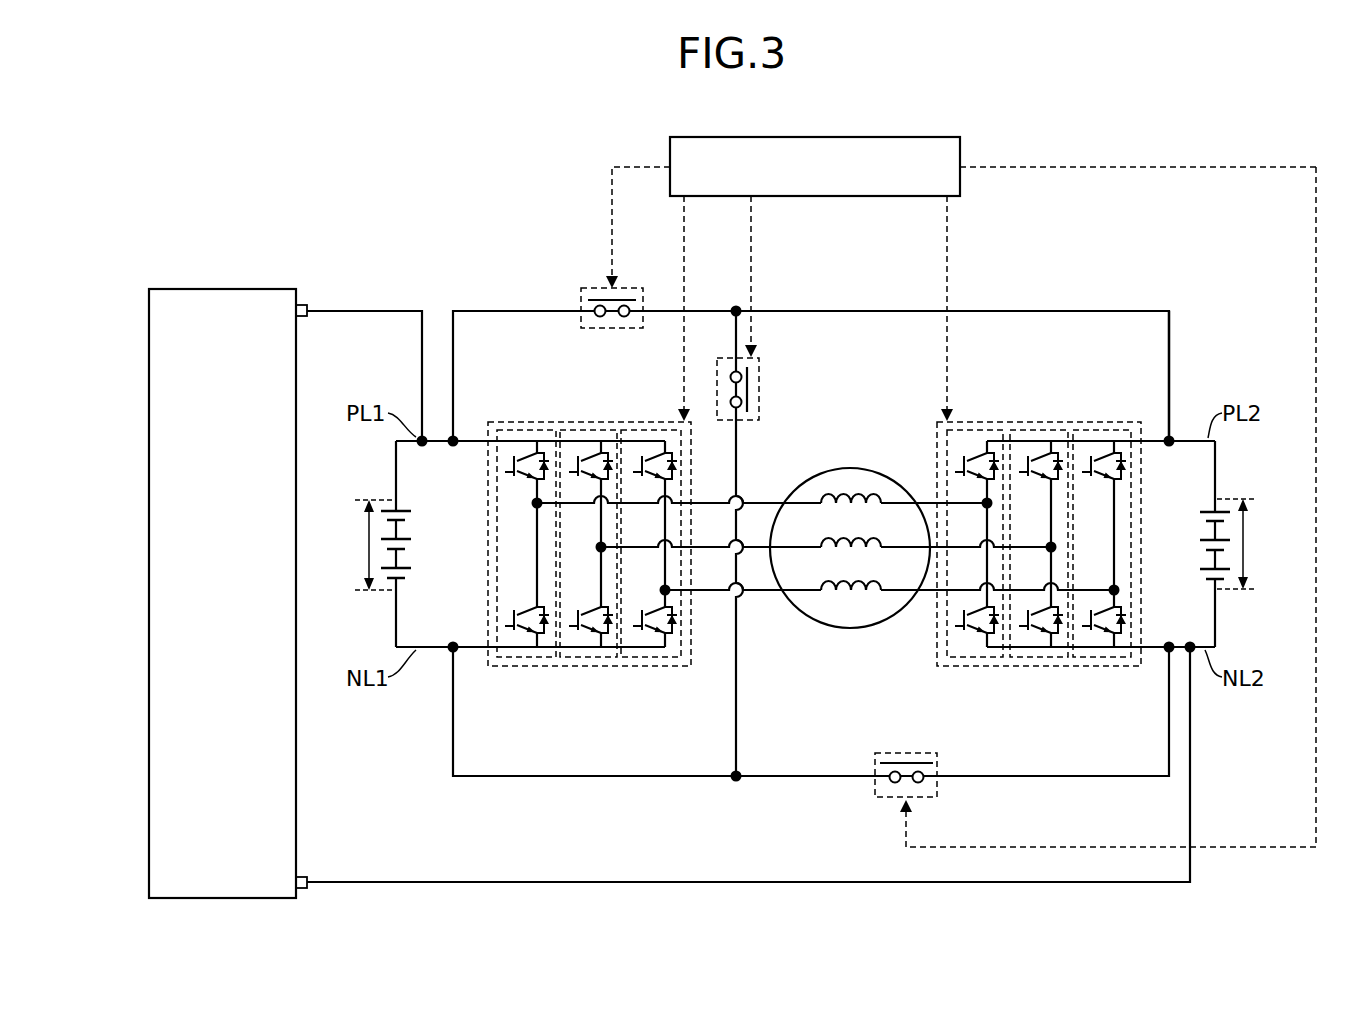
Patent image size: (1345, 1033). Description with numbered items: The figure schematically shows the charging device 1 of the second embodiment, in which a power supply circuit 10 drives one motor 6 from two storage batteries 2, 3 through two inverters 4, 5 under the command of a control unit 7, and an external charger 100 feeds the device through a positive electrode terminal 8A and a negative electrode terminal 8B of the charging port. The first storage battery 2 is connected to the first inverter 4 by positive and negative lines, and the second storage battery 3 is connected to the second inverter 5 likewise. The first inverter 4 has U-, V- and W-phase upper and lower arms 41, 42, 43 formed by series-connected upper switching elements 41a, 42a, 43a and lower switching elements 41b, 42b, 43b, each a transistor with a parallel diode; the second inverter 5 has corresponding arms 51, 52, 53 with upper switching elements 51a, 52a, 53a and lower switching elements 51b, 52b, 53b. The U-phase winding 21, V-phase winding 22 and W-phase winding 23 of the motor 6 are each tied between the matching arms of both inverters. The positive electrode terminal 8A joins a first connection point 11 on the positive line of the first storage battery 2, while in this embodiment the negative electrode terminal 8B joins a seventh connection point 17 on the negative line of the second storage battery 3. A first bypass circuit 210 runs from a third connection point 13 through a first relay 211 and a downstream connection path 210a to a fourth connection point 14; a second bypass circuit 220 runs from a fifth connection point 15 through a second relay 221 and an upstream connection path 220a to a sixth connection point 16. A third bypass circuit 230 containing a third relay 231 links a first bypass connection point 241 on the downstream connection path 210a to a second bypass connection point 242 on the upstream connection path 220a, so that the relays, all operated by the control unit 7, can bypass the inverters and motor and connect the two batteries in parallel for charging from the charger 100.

The charging device 1 is at (1138, 140).
The charger 100 is at (236, 289).
The positive electrode terminal 8A is at (302, 304).
The negative electrode terminal 8B is at (304, 890).
The control unit 7 is at (890, 137).
The power supply circuit 10 is at (1078, 282).
The first storage battery 2 is at (388, 500).
The second storage battery 3 is at (1222, 500).
The first inverter 4 is at (565, 421).
The second inverter 5 is at (1075, 421).
The motor 6 is at (846, 468).
The first connection point 11 is at (422, 447).
The third connection point 13 is at (453, 447).
The fourth connection point 14 is at (1169, 447).
The fifth connection point 15 is at (1168, 640).
The sixth connection point 16 is at (455, 640).
The seventh connection point 17 is at (1190, 640).
The U-phase winding 21 is at (829, 497).
The V-phase winding 22 is at (866, 541).
The W-phase winding 23 is at (870, 598).
The U-phase upper and lower arms 41 is at (533, 658).
The V-phase upper and lower arms 42 is at (597, 658).
The W-phase upper and lower arms 43 is at (660, 658).
The switching element 41a is at (503, 470).
The switching element 42a is at (567, 470).
The switching element 43a is at (631, 470).
The switching element 41b is at (503, 624).
The switching element 42b is at (567, 624).
The switching element 43b is at (631, 624).
The U-phase upper and lower arms 51 is at (983, 658).
The V-phase upper and lower arms 52 is at (1047, 658).
The W-phase upper and lower arms 53 is at (1109, 658).
The switching element 51a is at (953, 470).
The switching element 52a is at (1017, 470).
The switching element 53a is at (1080, 470).
The switching element 51b is at (953, 624).
The switching element 52b is at (1017, 624).
The switching element 53b is at (1080, 624).
The first bypass circuit 210 is at (820, 312).
The downstream connection path 210a is at (1017, 309).
The first relay 211 is at (612, 270).
The second bypass circuit 220 is at (787, 780).
The upstream connection path 220a is at (487, 780).
The second relay 221 is at (890, 752).
The third bypass circuit 230 is at (739, 691).
The third relay 231 is at (748, 385).
The first bypass connection point 241 is at (736, 304).
The second bypass connection point 242 is at (737, 783).